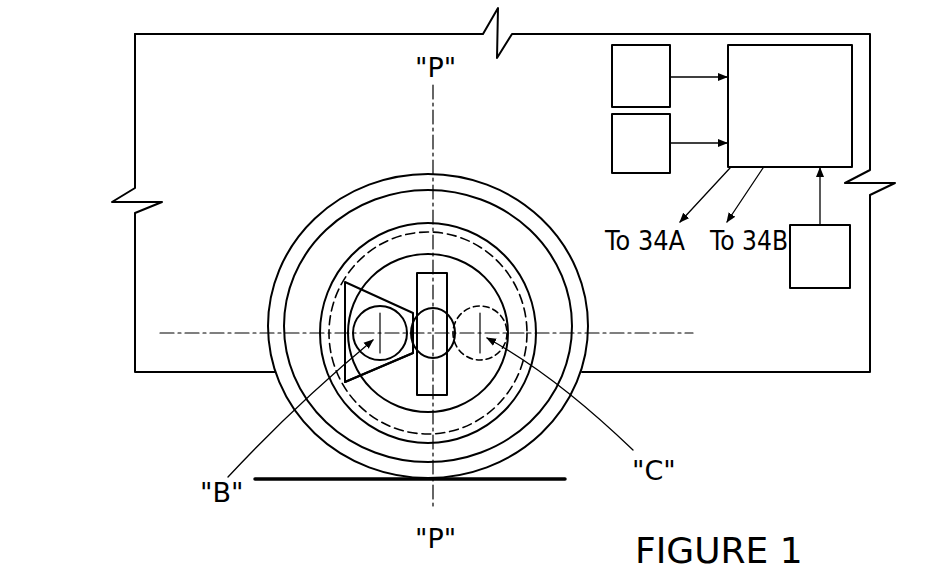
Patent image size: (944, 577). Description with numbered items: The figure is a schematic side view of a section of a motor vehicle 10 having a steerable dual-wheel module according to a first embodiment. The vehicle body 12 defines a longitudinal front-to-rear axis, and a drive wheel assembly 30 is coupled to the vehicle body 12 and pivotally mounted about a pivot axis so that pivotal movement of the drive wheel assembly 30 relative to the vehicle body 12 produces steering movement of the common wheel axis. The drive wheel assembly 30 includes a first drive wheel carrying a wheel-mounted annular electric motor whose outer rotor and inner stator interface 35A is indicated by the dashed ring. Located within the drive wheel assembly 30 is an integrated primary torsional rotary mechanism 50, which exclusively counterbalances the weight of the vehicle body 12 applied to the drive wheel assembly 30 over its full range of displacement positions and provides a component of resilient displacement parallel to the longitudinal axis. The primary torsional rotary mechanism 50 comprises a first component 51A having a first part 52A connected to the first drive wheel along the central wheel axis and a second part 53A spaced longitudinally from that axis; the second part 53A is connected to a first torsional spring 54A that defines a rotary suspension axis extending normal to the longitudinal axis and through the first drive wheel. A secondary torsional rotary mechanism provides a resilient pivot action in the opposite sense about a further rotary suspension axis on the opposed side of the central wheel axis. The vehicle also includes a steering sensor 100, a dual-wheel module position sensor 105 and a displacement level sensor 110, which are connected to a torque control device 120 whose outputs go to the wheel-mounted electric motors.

The motor vehicle 10 is at (96, 113).
The vehicle body 12 is at (135, 286).
The drive wheel assembly 30 is at (277, 407).
The outer rotor and inner stator interface 35A is at (445, 232).
The primary torsional rotary mechanism 50 is at (398, 358).
The first component 51A is at (385, 300).
The first part 52A is at (452, 350).
The second part 53A is at (347, 382).
The first torsional spring 54A is at (372, 325).
The steering sensor 100 is at (669, 76).
The dual-wheel module position sensor 105 is at (669, 143).
The displacement level sensor 110 is at (820, 228).
The torque control device 120 is at (766, 133).